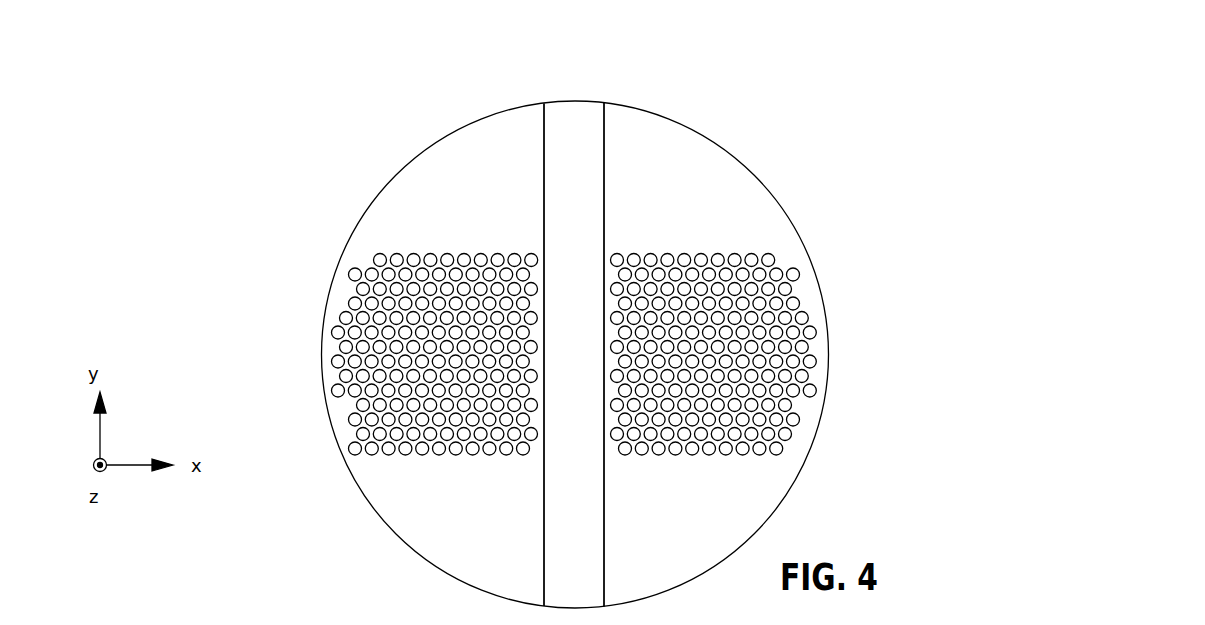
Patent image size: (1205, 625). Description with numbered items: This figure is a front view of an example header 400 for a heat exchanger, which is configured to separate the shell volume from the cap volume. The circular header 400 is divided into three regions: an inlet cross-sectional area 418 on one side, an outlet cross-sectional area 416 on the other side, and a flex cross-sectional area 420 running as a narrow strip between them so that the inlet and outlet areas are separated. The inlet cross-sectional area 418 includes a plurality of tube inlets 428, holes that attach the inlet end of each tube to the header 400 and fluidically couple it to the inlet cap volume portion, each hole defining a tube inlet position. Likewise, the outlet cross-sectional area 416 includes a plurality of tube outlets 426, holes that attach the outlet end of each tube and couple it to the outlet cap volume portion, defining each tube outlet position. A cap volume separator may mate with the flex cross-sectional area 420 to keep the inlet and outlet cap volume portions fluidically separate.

The header 400 is at (1067, 122).
The outlet cross-sectional area 416 is at (457, 198).
The inlet cross-sectional area 418 is at (683, 175).
The flex cross-sectional area 420 is at (570, 167).
The tube outlets 426 is at (356, 316).
The tube inlets 428 is at (792, 280).